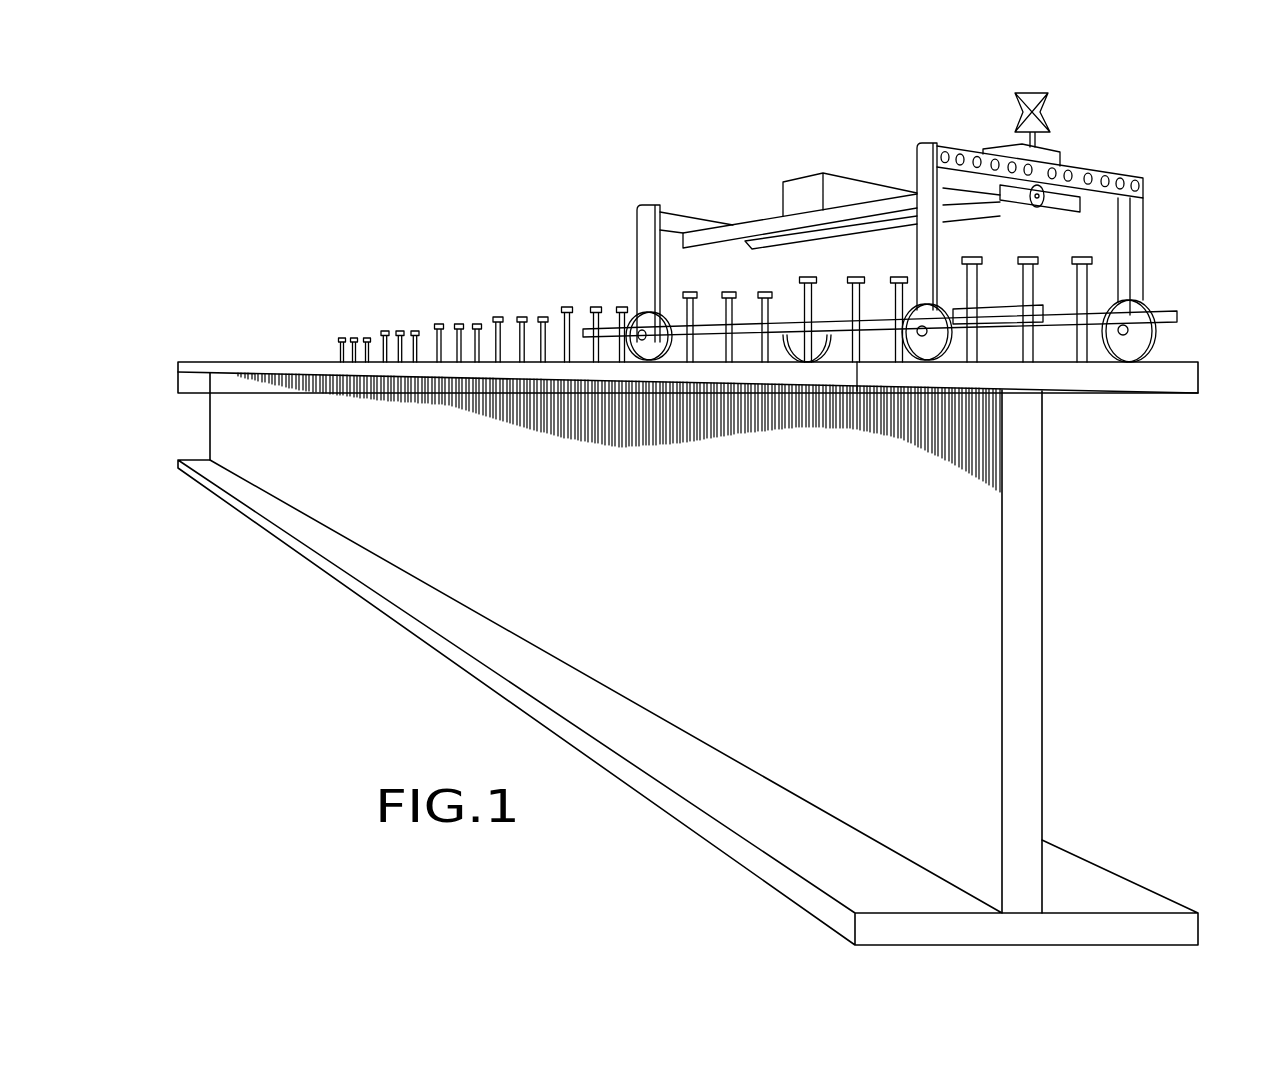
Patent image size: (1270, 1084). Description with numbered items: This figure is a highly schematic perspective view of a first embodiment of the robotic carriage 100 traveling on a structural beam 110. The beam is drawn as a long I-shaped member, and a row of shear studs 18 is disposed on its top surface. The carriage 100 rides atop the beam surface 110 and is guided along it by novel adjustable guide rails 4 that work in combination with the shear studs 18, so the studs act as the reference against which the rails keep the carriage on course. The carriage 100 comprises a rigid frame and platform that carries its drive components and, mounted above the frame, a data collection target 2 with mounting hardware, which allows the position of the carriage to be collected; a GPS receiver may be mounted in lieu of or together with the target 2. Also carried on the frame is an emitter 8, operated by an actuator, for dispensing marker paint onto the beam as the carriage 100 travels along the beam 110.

The data collection target 2 is at (1049, 110).
The robotic carriage 100 is at (1122, 167).
The shear studs 18 is at (441, 333).
The emitter 8 is at (1020, 203).
The adjustable guide rails 4 is at (1177, 315).
The structural beam 110 is at (1025, 507).